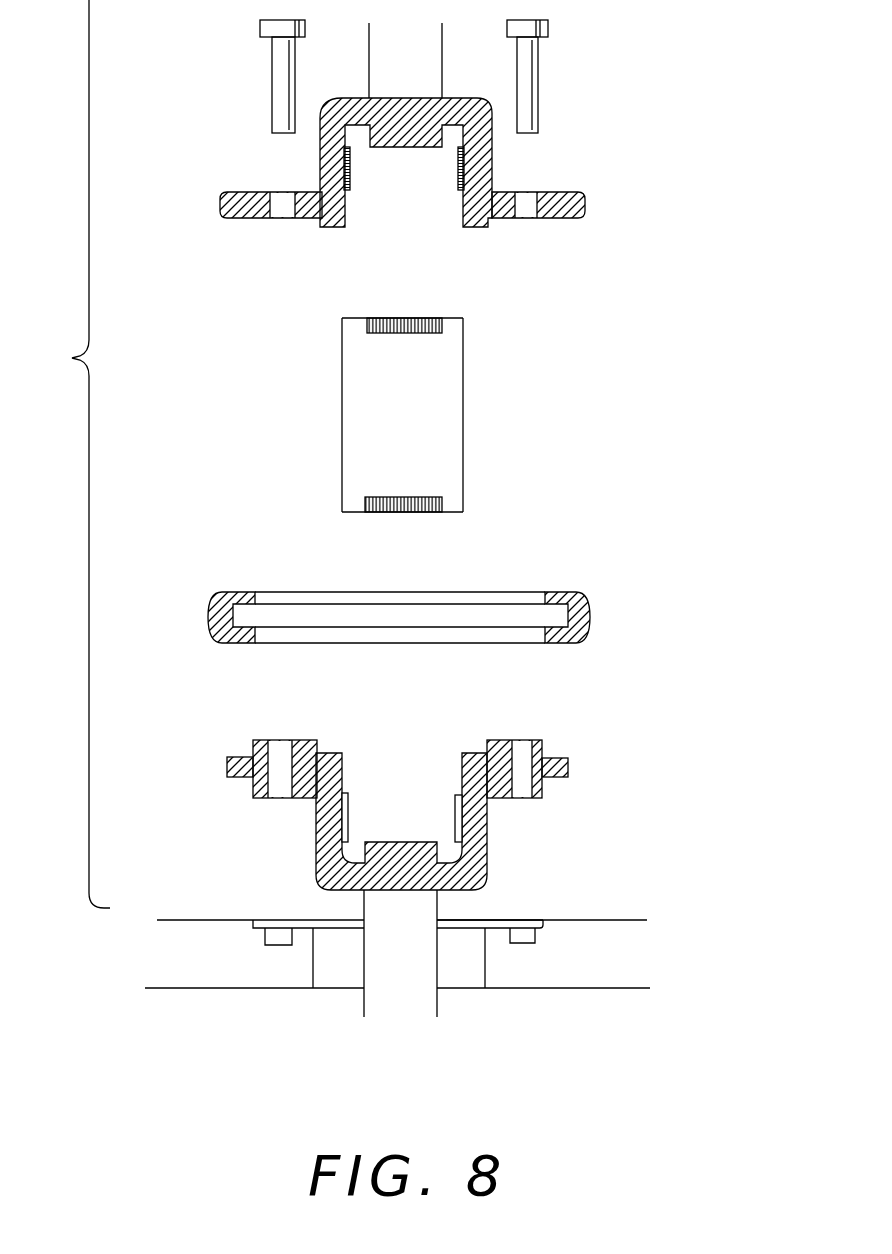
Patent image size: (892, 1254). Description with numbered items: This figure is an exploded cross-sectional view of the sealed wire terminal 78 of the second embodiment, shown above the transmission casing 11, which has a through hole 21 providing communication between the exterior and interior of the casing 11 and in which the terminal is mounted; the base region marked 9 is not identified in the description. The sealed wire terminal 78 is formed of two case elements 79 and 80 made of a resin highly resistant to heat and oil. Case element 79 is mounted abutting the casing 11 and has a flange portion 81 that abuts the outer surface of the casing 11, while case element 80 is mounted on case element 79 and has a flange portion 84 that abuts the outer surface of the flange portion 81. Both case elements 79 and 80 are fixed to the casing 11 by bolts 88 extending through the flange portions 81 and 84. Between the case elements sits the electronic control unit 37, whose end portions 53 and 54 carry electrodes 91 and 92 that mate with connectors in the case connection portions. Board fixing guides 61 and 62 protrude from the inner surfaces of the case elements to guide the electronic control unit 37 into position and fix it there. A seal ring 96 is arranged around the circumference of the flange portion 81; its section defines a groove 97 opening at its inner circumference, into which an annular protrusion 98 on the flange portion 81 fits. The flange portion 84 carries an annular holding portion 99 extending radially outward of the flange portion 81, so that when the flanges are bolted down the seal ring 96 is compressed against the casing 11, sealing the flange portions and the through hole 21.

The housing base 9 is at (217, 968).
The transmission casing 11 is at (609, 914).
The through hole 21 is at (482, 962).
The electronic control unit 37 is at (422, 423).
The end portion 53 is at (458, 313).
The end portion 54 is at (450, 516).
The board fixing guide 61 is at (352, 127).
The board fixing guide 62 is at (350, 182).
The sealed wire terminal 78 is at (253, 454).
The case element 79 is at (303, 727).
The case element 80 is at (307, 224).
The flange portion 81 is at (538, 733).
The flange portion 84 is at (552, 190).
The bolt 88 is at (268, 68).
The electrode 91 is at (412, 318).
The electrode 92 is at (392, 512).
The seal ring 96 is at (442, 579).
The groove 97 is at (550, 617).
The annular protrusion 98 is at (569, 767).
The annular holding portion 99 is at (586, 205).